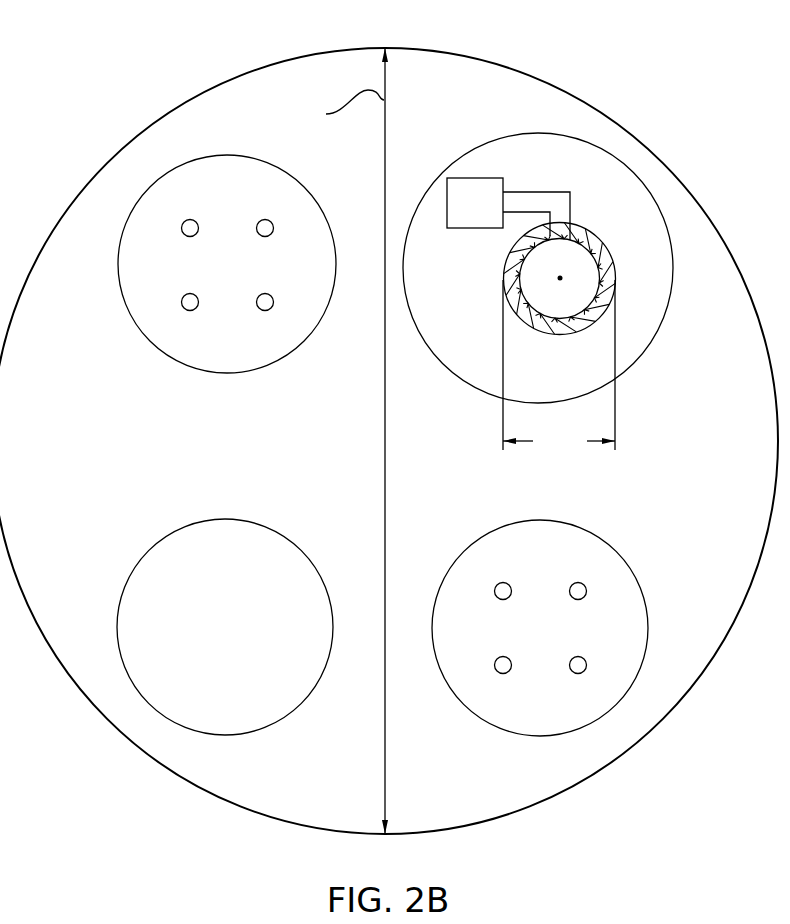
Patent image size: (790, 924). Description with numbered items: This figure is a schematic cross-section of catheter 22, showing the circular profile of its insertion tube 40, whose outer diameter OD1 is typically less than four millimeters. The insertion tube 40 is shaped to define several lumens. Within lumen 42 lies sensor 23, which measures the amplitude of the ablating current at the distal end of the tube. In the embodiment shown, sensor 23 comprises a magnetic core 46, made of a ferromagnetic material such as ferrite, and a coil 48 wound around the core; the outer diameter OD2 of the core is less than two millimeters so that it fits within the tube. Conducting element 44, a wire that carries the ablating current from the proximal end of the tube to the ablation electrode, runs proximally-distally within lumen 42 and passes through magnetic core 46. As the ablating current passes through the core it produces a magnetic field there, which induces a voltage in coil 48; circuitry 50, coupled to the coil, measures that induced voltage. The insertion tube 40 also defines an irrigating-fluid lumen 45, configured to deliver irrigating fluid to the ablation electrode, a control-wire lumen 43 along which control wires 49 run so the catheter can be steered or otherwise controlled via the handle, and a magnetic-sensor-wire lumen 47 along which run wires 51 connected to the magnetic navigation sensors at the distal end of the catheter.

The catheter 22 is at (155, 71).
The insertion tube 40 is at (520, 74).
The sensor 23 is at (610, 203).
The lumen 42 is at (559, 166).
The control-wire lumen 43 is at (227, 281).
The conducting element 44 is at (560, 278).
The irrigating-fluid lumen 45 is at (243, 557).
The magnetic core 46 is at (607, 302).
The magnetic-sensor-wire lumen 47 is at (552, 628).
The coil 48 is at (548, 331).
The control wires 49 is at (265, 311).
The circuitry 50 is at (480, 178).
The wires 51 is at (586, 586).